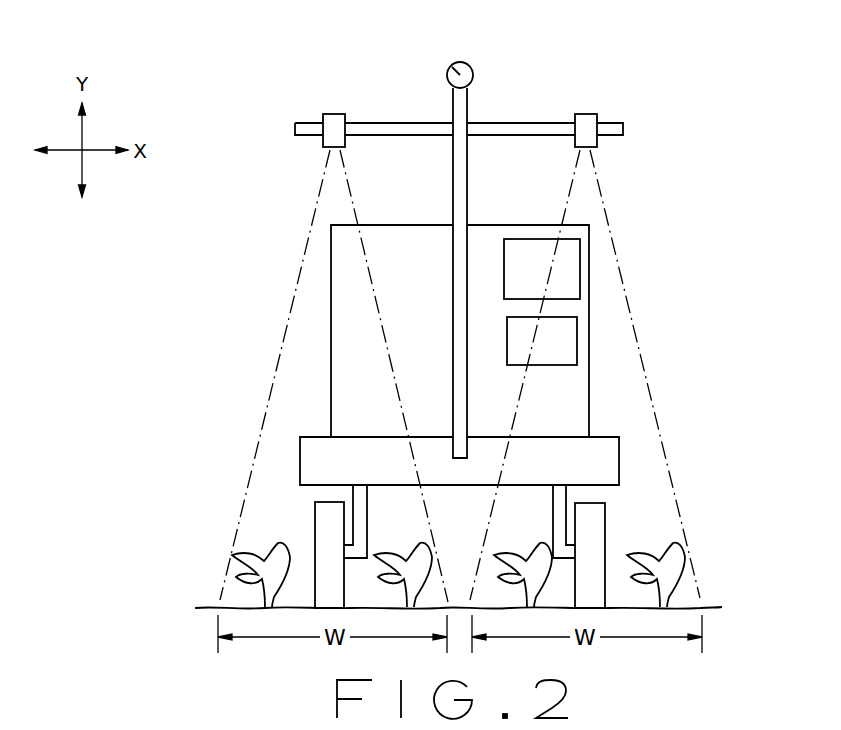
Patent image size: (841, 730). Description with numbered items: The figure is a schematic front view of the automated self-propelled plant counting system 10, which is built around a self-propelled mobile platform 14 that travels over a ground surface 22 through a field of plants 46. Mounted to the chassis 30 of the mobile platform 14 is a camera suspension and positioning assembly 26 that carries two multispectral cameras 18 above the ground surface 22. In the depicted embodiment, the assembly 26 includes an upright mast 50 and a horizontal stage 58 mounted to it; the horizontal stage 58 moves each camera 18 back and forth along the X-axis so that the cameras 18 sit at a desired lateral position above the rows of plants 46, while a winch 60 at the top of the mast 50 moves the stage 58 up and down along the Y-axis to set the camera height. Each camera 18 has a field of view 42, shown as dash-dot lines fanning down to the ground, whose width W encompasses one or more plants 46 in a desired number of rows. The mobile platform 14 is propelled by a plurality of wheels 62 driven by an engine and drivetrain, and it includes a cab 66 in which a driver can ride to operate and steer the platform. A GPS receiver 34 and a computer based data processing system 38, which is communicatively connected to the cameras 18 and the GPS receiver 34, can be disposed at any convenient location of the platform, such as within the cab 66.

The system 10 is at (586, 57).
The self-propelled mobile platform 14 is at (646, 271).
The multispectral cameras 18 is at (337, 113).
The ground surface 22 is at (717, 607).
The camera suspension and positioning assembly 26 is at (436, 179).
The chassis 30 is at (600, 460).
The Global Positioning System (GPS) receiver 34 is at (504, 259).
The computer based data processing system 38 is at (577, 340).
The field of view 42 is at (303, 258).
The plants 46 is at (252, 550).
The mast 50 is at (460, 335).
The horizontal stage 58 is at (488, 124).
The winch 60 is at (452, 62).
The wheels 62 is at (315, 525).
The cab 66 is at (590, 242).